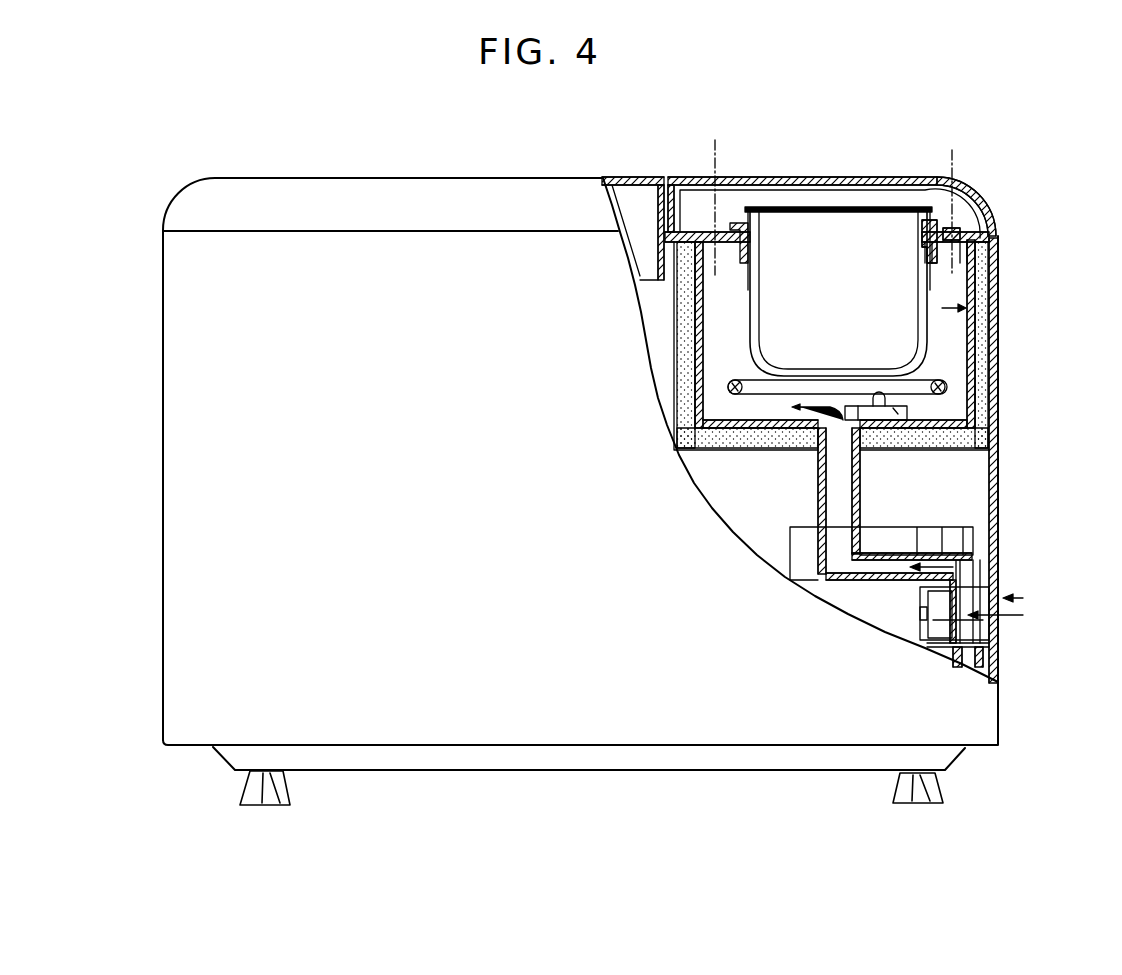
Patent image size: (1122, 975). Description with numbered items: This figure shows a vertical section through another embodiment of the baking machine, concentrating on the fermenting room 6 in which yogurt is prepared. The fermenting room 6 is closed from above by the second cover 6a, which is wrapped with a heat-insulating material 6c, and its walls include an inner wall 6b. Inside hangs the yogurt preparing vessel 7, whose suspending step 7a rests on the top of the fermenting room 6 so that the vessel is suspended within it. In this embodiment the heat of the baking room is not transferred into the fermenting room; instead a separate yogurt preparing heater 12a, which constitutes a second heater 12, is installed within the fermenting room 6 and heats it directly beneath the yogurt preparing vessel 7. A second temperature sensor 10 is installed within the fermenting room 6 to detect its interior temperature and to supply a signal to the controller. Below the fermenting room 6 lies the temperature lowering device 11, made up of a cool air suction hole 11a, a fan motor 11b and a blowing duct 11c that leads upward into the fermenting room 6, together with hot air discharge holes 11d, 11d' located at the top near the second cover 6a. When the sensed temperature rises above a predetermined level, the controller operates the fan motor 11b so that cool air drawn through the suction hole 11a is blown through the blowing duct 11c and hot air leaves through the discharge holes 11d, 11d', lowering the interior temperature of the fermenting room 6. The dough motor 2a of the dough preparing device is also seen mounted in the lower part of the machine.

The second cover 6a is at (820, 177).
The yogurt preparing vessel 7 is at (883, 234).
The suspending step 7a is at (928, 222).
The hot air discharge hole 11d' is at (985, 170).
The hot air discharge hole 11d is at (995, 204).
The fermenting room 6 is at (998, 304).
The second heater 12 is at (942, 368).
The yogurt preparing heater 12a is at (945, 388).
The housing inner wall 6b is at (974, 395).
The heat-insulating material 6c is at (983, 418).
The second temperature sensor 10 is at (906, 426).
The blowing duct 11c is at (840, 493).
The dough motor 2a is at (953, 543).
The fan motor 11b is at (977, 602).
The temperature lowering device 11 is at (1023, 616).
The cool air suction hole 11a is at (990, 627).